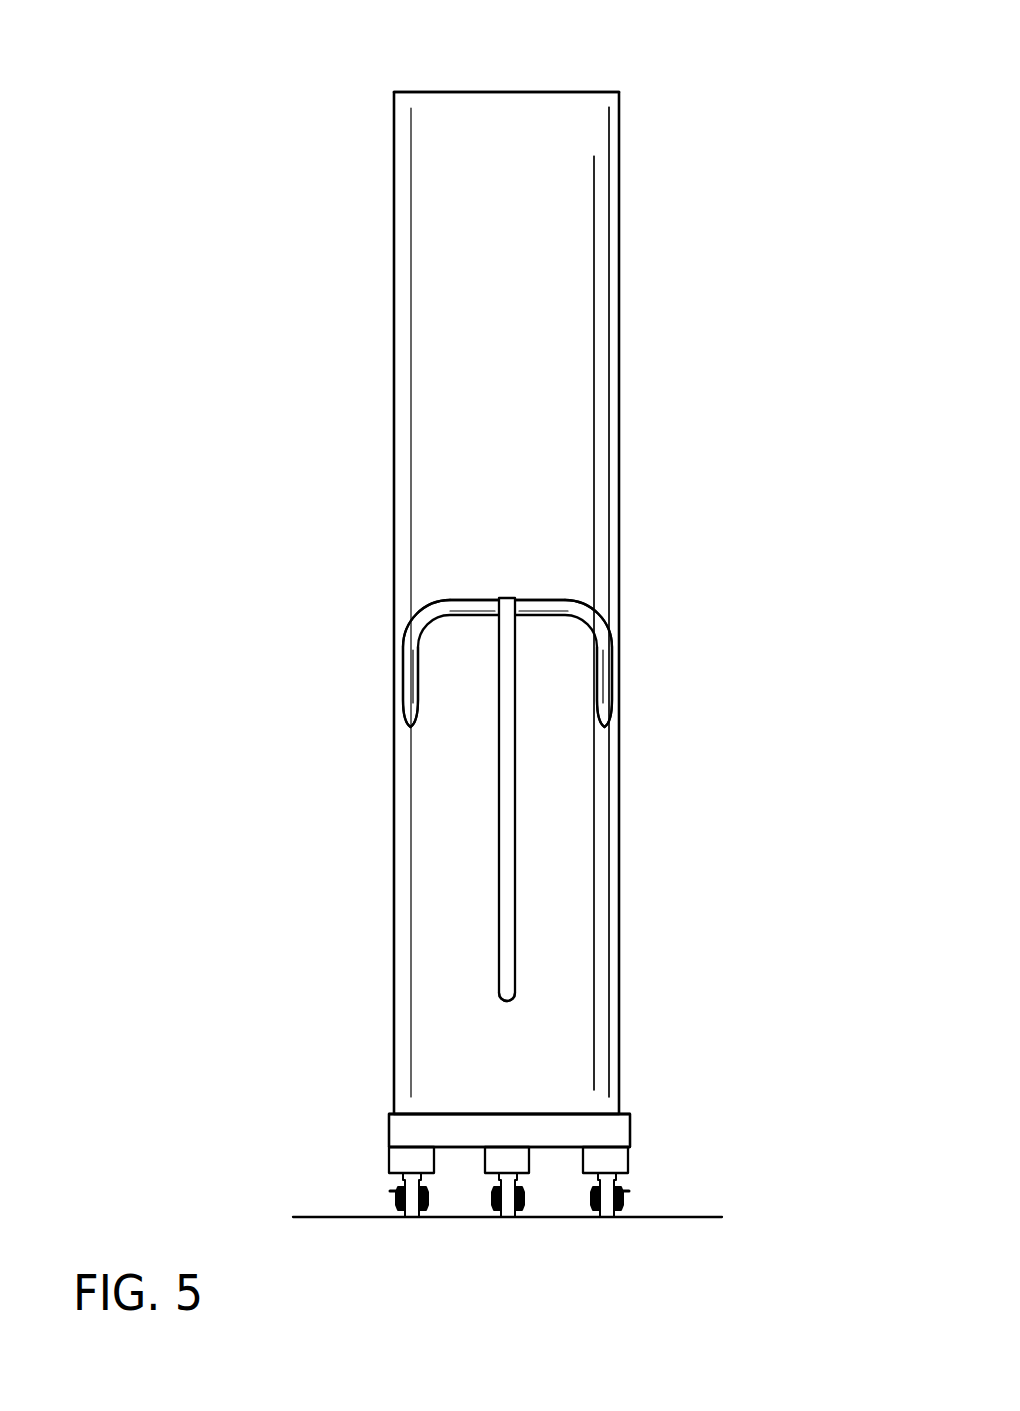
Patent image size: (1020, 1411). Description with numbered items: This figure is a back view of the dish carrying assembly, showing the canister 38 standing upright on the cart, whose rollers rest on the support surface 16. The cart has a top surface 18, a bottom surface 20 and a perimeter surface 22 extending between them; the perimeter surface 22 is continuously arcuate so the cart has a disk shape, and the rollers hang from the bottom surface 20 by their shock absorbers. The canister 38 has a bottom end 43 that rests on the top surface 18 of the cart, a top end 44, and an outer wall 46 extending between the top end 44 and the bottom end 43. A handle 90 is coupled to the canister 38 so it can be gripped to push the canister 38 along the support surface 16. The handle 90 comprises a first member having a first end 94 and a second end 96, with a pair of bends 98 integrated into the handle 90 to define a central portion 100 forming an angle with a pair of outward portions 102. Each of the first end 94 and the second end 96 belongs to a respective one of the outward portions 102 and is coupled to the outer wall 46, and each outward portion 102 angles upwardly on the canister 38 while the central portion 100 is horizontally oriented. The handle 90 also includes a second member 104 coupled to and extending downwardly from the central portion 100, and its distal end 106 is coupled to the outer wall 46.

The support surface 16 is at (333, 1217).
The top surface 18 is at (582, 1113).
The bottom surface 20 is at (552, 1147).
The perimeter surface 22 is at (613, 1142).
The canister 38 is at (410, 350).
The bottom end 43 is at (460, 1114).
The top end 44 is at (505, 92).
The outer wall 46 is at (548, 322).
The handle 90 is at (432, 598).
The first end 94 is at (410, 730).
The second end 96 is at (605, 730).
The bends 98 is at (398, 595).
The central portion 100 is at (535, 598).
The outward portions 102 is at (408, 668).
The second member 104 is at (513, 910).
The distal end 106 is at (507, 1008).